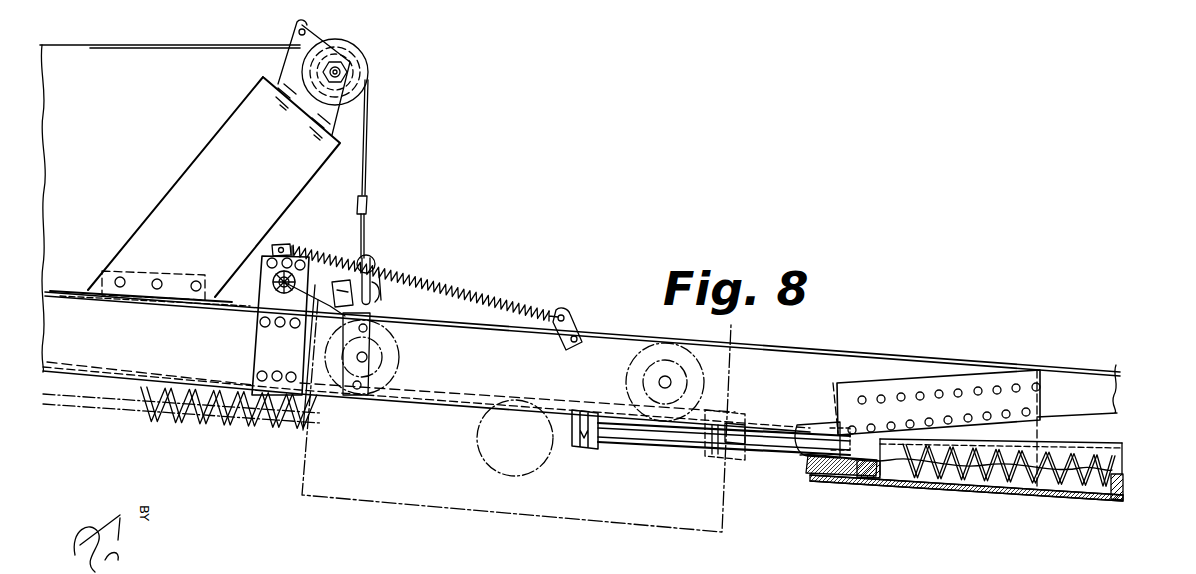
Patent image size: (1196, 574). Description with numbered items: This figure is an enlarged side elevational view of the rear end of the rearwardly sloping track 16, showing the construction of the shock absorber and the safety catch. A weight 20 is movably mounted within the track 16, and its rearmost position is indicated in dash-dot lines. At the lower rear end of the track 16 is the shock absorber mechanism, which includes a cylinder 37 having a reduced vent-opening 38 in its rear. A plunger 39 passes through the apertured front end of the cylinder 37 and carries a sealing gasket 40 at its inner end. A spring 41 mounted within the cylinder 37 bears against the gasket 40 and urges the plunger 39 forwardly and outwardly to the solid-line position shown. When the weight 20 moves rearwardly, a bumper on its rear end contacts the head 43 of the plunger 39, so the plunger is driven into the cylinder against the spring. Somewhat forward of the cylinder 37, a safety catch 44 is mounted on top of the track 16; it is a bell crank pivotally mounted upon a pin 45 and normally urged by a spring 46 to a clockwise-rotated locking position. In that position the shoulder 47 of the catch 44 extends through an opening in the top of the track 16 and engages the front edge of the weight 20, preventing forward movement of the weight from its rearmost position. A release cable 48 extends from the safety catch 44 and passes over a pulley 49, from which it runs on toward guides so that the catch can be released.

The track 16 is at (125, 356).
The weight 20 is at (405, 478).
The cylinder 37 is at (1060, 494).
The vent-opening 38 is at (1123, 474).
The plunger 39 is at (768, 452).
The sealing gasket 40 is at (864, 480).
The spring 41 is at (950, 480).
The head 43 is at (592, 440).
The safety catch 44 is at (374, 256).
The pin 45 is at (272, 280).
The spring 46 is at (470, 294).
The shoulder 47 is at (374, 294).
The release cable 48 is at (162, 44).
The pulley 49 is at (385, 36).